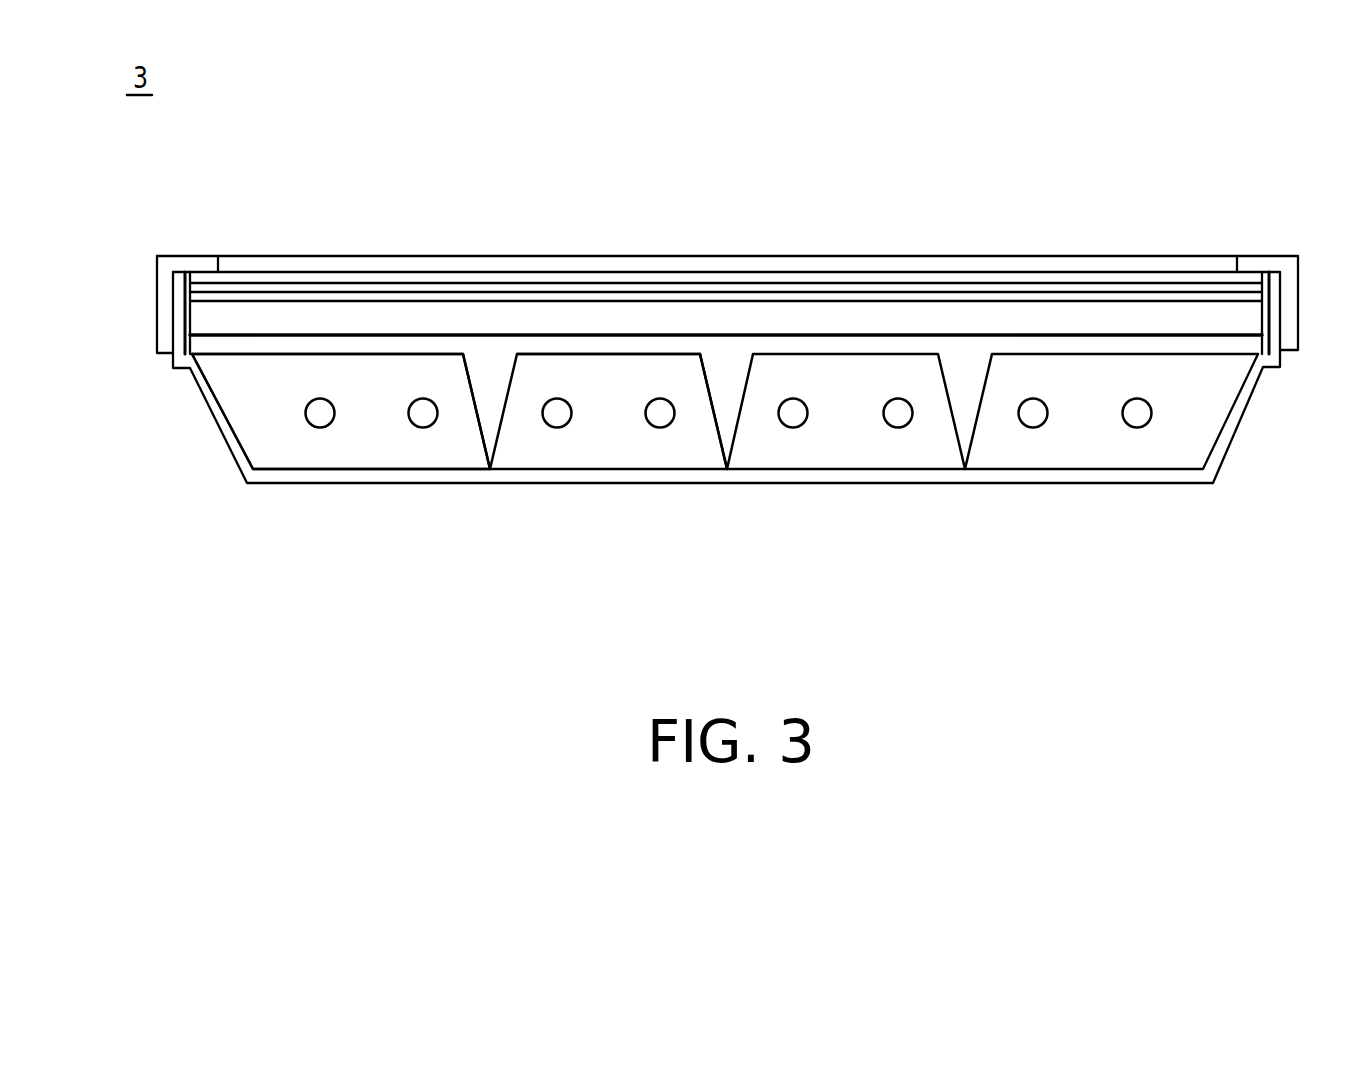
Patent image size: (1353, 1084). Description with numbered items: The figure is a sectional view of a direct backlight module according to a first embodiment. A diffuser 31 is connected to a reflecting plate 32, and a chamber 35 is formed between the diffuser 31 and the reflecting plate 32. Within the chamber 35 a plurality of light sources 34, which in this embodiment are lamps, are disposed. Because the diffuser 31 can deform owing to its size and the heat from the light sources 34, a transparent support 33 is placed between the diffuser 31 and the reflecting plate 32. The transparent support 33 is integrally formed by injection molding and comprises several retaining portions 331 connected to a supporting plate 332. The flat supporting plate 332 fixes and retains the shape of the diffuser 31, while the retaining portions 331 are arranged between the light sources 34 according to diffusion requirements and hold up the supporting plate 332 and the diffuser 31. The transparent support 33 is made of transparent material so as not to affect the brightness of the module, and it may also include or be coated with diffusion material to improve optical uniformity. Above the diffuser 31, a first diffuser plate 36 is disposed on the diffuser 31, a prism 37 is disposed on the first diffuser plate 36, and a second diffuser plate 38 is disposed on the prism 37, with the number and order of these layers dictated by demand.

The diffuser 31 is at (467, 317).
The reflecting plate 32 is at (918, 477).
The transparent support 33 is at (725, 365).
The retaining portions 331 is at (723, 445).
The supporting plate 332 is at (815, 347).
The light sources 34 is at (1137, 415).
The chamber 35 is at (370, 448).
The first diffuser plate 36 is at (1181, 298).
The prism 37 is at (1112, 287).
The second diffuser plate 38 is at (1042, 277).